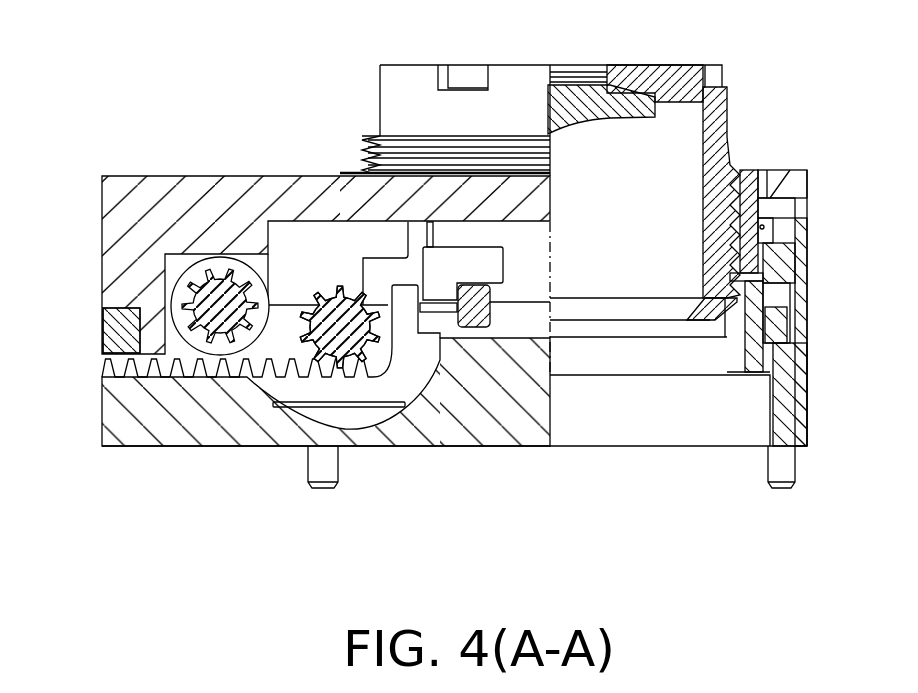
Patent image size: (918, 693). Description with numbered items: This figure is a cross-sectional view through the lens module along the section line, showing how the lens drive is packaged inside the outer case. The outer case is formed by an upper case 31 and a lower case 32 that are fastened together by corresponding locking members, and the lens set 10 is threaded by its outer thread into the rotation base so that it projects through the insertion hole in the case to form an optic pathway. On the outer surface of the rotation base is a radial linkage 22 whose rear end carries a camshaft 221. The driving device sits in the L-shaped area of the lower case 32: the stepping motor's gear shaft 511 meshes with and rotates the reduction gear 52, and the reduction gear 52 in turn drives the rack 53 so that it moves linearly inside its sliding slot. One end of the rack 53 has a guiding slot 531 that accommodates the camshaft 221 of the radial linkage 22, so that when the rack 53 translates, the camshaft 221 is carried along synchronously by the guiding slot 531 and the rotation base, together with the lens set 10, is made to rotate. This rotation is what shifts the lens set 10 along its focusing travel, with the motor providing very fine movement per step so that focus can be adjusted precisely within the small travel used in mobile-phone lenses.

The lens set 10 is at (382, 103).
The radial linkage 22 is at (438, 258).
The camshaft 221 is at (470, 290).
The upper case 31 is at (118, 240).
The lower case 32 is at (125, 418).
The gear shaft 511 is at (217, 292).
The reduction gear 52 is at (340, 300).
The rack 53 is at (322, 392).
The guiding slot 531 is at (437, 323).